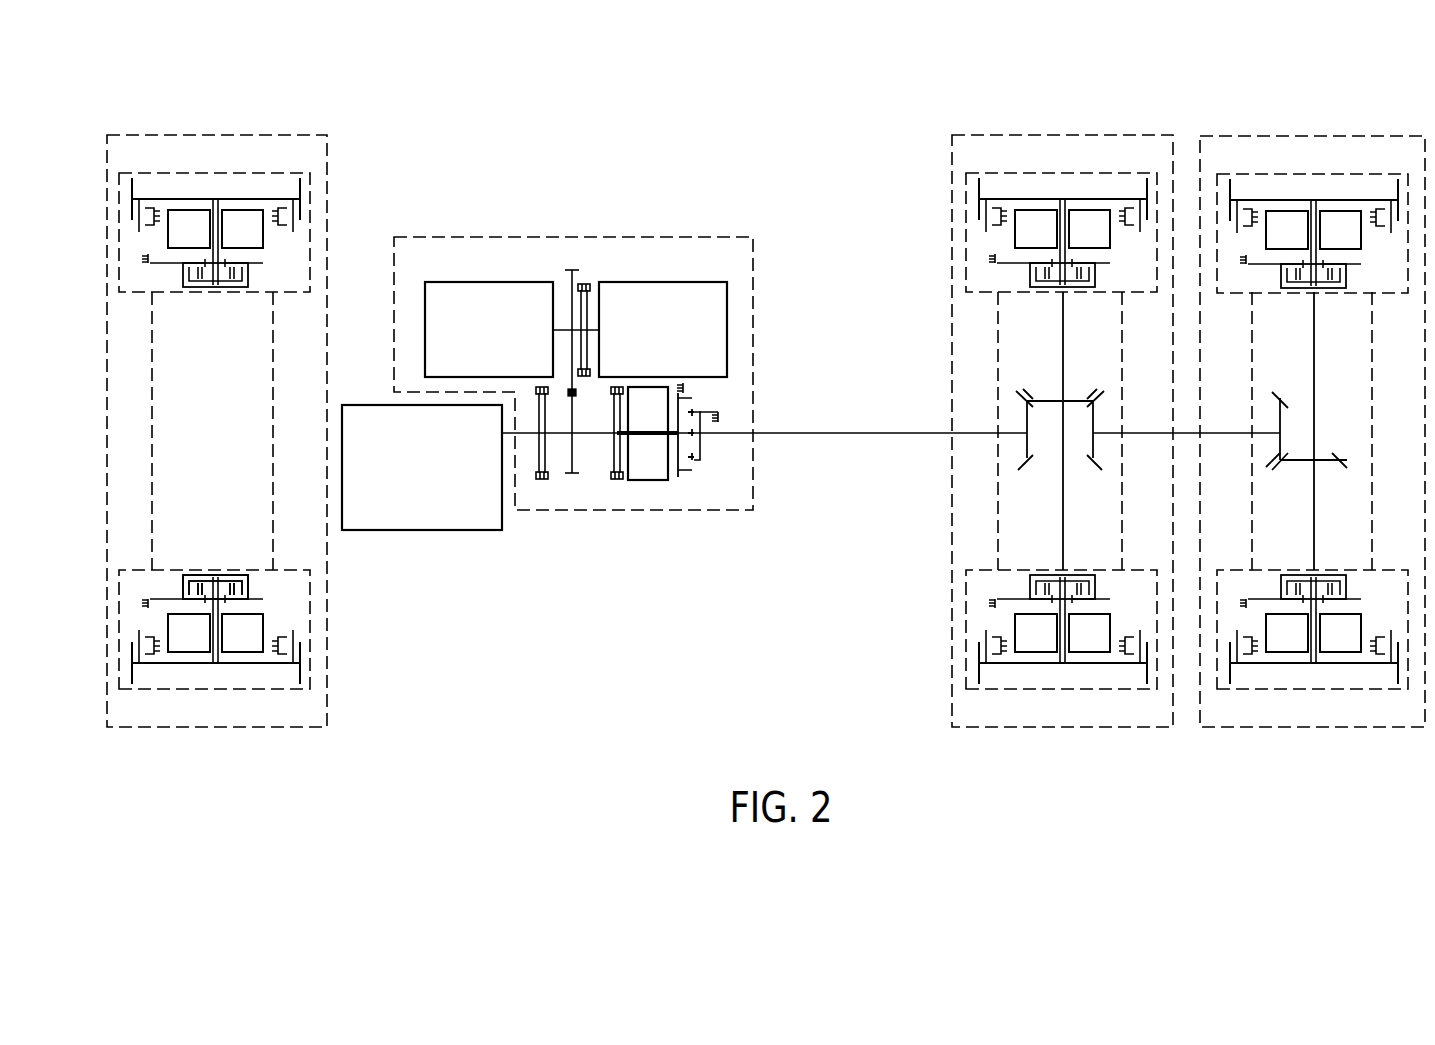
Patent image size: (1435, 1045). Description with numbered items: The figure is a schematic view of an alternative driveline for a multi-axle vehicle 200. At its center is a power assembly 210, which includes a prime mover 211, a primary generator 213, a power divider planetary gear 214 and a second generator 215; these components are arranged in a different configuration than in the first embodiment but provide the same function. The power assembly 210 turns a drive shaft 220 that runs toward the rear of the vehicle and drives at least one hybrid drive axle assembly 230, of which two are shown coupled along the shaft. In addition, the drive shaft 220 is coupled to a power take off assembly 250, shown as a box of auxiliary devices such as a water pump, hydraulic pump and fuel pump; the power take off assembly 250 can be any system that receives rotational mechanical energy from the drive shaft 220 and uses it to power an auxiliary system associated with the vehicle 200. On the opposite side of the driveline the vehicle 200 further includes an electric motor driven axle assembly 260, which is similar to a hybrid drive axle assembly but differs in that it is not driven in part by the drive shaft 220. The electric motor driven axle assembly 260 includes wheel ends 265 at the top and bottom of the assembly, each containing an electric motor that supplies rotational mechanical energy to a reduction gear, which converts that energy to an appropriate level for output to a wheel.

The vehicle 200 is at (1314, 66).
The power assembly 210 is at (757, 372).
The prime mover 211 is at (492, 282).
The primary generator 213 is at (663, 282).
The power divider planetary gear 214 is at (698, 457).
The second generator 215 is at (648, 480).
The drive shaft 220 is at (880, 433).
The hybrid drive axle assembly 230 is at (1062, 130).
The power take off assembly 250 is at (470, 530).
The electric motor driven axle assembly 260 is at (327, 692).
The wheel end 265 is at (217, 173).